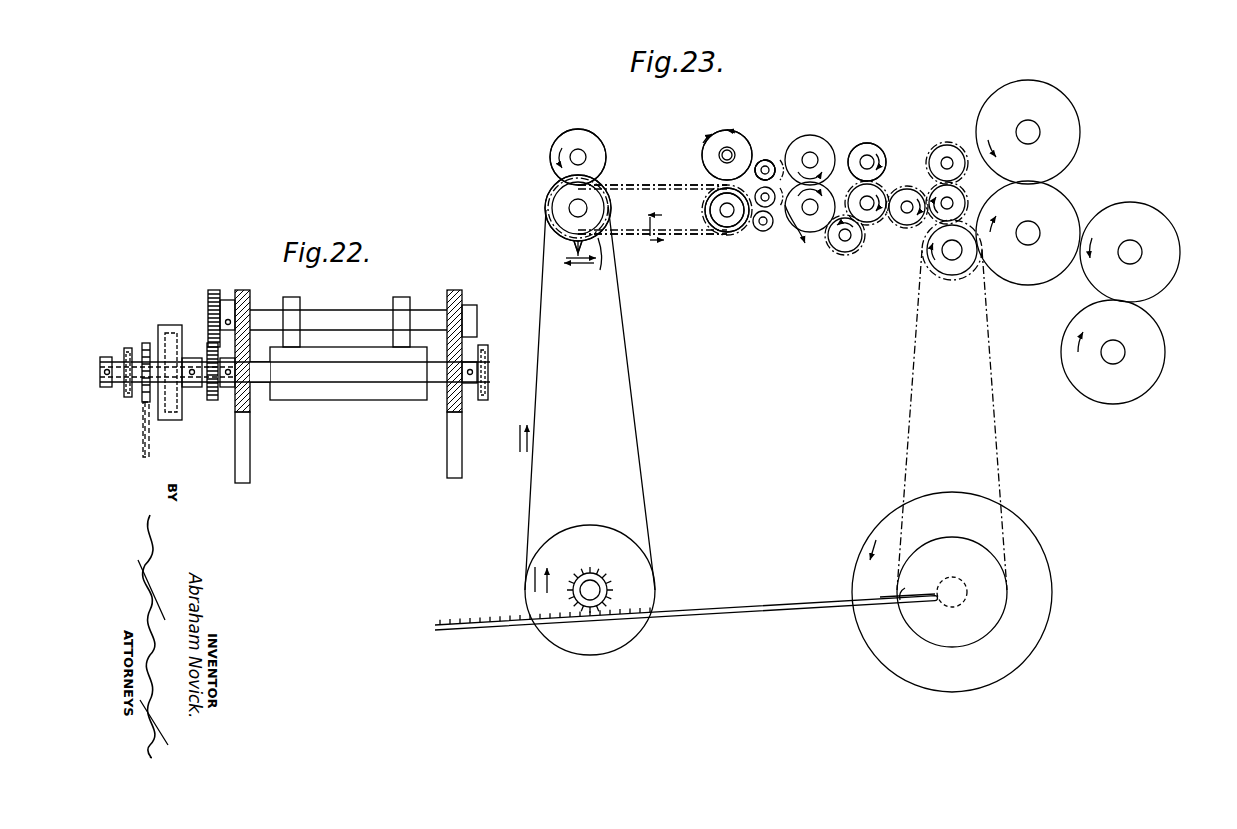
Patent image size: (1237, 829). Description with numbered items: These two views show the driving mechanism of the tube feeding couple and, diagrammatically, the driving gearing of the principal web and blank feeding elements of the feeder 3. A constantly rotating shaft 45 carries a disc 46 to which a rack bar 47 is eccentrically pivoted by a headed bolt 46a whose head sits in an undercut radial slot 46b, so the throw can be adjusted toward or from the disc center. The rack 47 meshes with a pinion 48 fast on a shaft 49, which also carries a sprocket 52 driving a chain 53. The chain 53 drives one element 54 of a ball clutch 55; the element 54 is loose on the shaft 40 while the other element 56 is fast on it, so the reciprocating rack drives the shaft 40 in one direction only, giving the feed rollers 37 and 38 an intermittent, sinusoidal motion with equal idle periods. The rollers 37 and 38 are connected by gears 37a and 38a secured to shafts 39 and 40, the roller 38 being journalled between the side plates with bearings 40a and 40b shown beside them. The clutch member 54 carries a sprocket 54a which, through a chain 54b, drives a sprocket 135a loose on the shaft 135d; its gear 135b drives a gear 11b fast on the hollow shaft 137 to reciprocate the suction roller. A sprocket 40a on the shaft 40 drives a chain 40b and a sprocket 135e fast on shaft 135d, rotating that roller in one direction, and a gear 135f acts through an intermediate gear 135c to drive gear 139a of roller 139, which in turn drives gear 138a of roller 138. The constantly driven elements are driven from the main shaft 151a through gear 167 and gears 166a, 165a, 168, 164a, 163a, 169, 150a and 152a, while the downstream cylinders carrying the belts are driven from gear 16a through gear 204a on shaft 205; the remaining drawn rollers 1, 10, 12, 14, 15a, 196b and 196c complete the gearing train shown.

In FIG. 23, the pulley assembly 1 is at (553, 205).
In FIG. 23, the feeder 3 is at (573, 129).
In FIG. 23, the feed roll unit 10 is at (736, 127).
In FIG. 23, the gear 11b is at (725, 132).
In FIG. 23, the roller 12 is at (761, 150).
In FIG. 23, the roller 14 is at (878, 140).
In FIG. 23, the drum 15a is at (1063, 97).
In FIG. 23, the gear 16a is at (1061, 200).
In FIG. 22, the feed roller 37 is at (287, 299).
In FIG. 22, the gear 37a is at (216, 290).
In FIG. 22, the feed roller 38 is at (345, 389).
In FIG. 22, the gear 38a is at (214, 400).
In FIG. 22, the shaft 39 is at (350, 311).
In FIG. 23, the shaft 39 is at (581, 150).
In FIG. 22, the shaft 40 is at (253, 382).
In FIG. 23, the shaft 40 is at (576, 209).
In FIG. 22, the sprocket 40a is at (470, 384).
In FIG. 23, the sprocket 40a is at (593, 263).
In FIG. 22, the chain 40b is at (484, 345).
In FIG. 23, the constantly rotating shaft 45 is at (953, 606).
In FIG. 23, the disc 46 is at (878, 650).
In FIG. 23, the headed bolt 46a is at (887, 599).
In FIG. 23, the undercut radial slot 46b is at (908, 592).
In FIG. 23, the rack bar 47 is at (470, 629).
In FIG. 23, the pinion 48 is at (583, 572).
In FIG. 23, the shaft 49 is at (597, 589).
In FIG. 22, the sprocket 52 is at (146, 406).
In FIG. 23, the sprocket 52 is at (583, 528).
In FIG. 22, the chain 53 is at (150, 435).
In FIG. 23, the chain 53 is at (632, 358).
In FIG. 22, the clutch member 54 is at (176, 420).
In FIG. 23, the clutch member 54 is at (556, 219).
In FIG. 22, the sprocket 54a is at (130, 349).
In FIG. 23, the sprocket 54a is at (593, 207).
In FIG. 22, the chain 54b is at (128, 394).
In FIG. 23, the chain 54b is at (623, 185).
In FIG. 22, the ball clutch 55 is at (173, 323).
In FIG. 22, the clutch element 56 is at (160, 330).
In FIG. 23, the sprocket 135a is at (720, 228).
In FIG. 23, the gear 135b is at (706, 215).
In FIG. 23, the intermediate gear 135c is at (765, 229).
In FIG. 23, the shaft 135d is at (725, 218).
In FIG. 23, the sprocket 135e is at (720, 193).
In FIG. 23, the gear 135f is at (733, 228).
In FIG. 23, the hollow shaft 137 is at (731, 151).
In FIG. 23, the roller 138 is at (756, 172).
In FIG. 23, the gear 138a is at (767, 160).
In FIG. 23, the roller 139 is at (755, 197).
In FIG. 23, the gear 139a is at (775, 205).
In FIG. 23, the gear 150a is at (821, 232).
In FIG. 23, the main shaft 151a is at (953, 260).
In FIG. 23, the gear 152a is at (810, 135).
In FIG. 23, the gear 163a is at (860, 146).
In FIG. 23, the gear 164a is at (870, 219).
In FIG. 23, the gear 165a is at (944, 146).
In FIG. 23, the gear 166a is at (934, 190).
In FIG. 23, the gear 167 is at (942, 266).
In FIG. 23, the gear 168 is at (905, 220).
In FIG. 23, the gear 169 is at (845, 253).
In FIG. 23, the shaft 196b is at (1128, 258).
In FIG. 23, the drum 196c is at (1148, 212).
In FIG. 23, the gear 204a is at (1153, 328).
In FIG. 23, the shaft 205 is at (1113, 358).